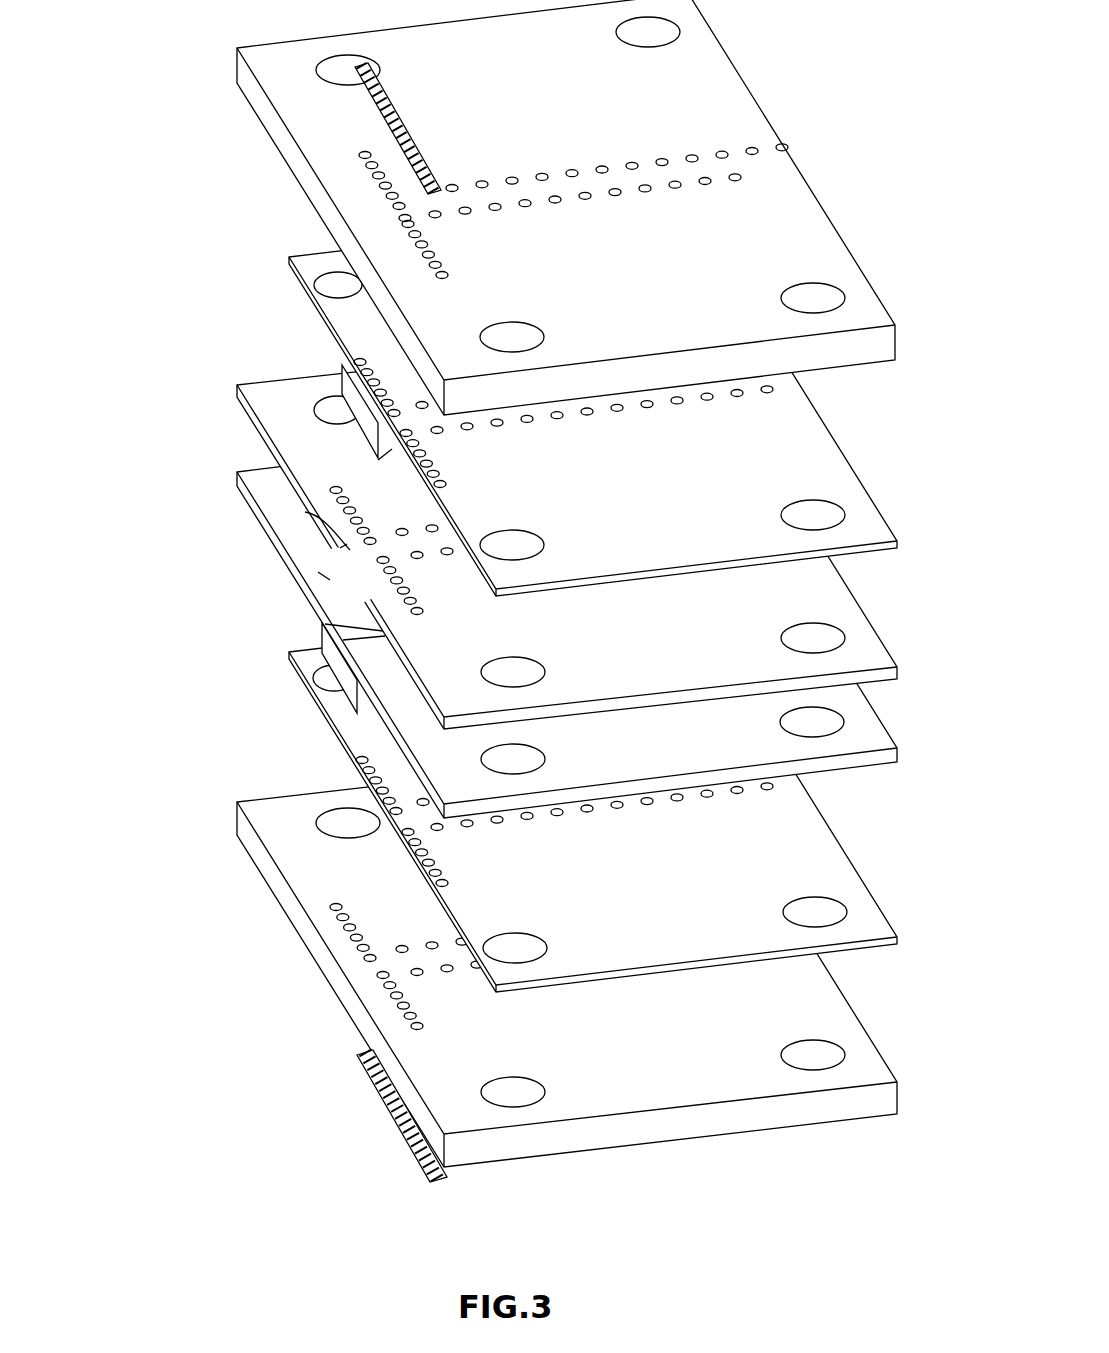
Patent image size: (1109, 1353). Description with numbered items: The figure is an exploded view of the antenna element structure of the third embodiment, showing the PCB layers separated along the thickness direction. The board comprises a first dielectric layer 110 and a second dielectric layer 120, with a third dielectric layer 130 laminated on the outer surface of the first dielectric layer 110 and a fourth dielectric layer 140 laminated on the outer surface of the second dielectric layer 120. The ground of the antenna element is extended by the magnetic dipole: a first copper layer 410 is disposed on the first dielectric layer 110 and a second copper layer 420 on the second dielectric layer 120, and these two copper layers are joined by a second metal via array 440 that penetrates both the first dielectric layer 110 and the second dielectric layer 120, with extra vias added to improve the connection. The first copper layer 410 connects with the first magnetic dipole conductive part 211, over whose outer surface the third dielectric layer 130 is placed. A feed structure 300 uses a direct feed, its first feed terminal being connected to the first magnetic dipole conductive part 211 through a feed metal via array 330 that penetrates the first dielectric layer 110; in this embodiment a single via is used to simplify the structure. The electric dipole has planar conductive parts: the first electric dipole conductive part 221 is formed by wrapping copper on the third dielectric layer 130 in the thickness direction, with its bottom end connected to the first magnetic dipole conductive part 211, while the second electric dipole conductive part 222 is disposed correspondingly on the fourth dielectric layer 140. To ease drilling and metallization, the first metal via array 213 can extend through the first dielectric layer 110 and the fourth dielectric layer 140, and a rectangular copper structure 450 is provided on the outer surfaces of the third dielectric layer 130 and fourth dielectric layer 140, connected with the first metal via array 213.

The third dielectric layer 130 is at (501, 207).
The first copper layer 410 is at (360, 323).
The first dielectric layer 110 is at (272, 470).
The second dielectric layer 120 is at (393, 733).
The second copper layer 420 is at (332, 710).
The fourth dielectric layer 140 is at (310, 925).
The rectangular copper structure 450 is at (398, 1128).
The second metal via array 440 is at (813, 297).
The first electric dipole conductive part 221 is at (387, 460).
The first magnetic dipole conductive part 211 is at (382, 468).
The second electric dipole conductive part 222 is at (340, 705).
The feed metal via array 330 is at (305, 512).
The first metal via array 213 is at (318, 572).
The feed structure 300 is at (322, 623).